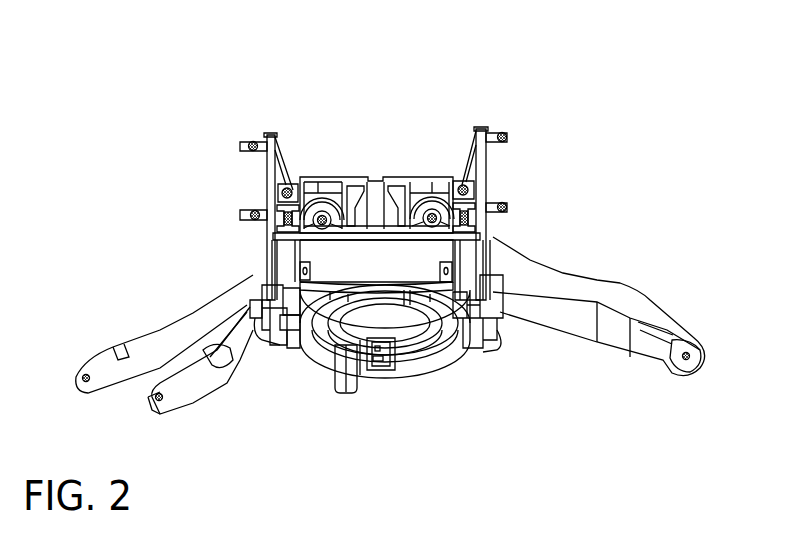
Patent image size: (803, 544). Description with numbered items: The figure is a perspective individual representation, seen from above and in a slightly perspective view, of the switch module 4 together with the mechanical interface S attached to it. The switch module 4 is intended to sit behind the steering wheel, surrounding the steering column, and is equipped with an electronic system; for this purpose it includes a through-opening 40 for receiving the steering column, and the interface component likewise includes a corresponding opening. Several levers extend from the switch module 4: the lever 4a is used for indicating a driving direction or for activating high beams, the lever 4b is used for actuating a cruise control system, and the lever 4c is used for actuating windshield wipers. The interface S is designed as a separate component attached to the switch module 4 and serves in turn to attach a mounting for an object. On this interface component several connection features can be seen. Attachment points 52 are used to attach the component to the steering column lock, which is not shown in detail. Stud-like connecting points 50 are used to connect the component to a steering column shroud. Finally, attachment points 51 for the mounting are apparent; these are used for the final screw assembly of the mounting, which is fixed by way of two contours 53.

The mechanical interface S is at (392, 171).
The switch module 4 is at (490, 358).
The lever 4a is at (88, 382).
The lever 4b is at (161, 402).
The lever 4c is at (692, 360).
The through-opening 40 is at (399, 357).
The stud-like connecting points 50 is at (507, 207).
The attachment points 51 is at (461, 185).
The attachment points 52 is at (431, 214).
The contours 53 is at (472, 220).